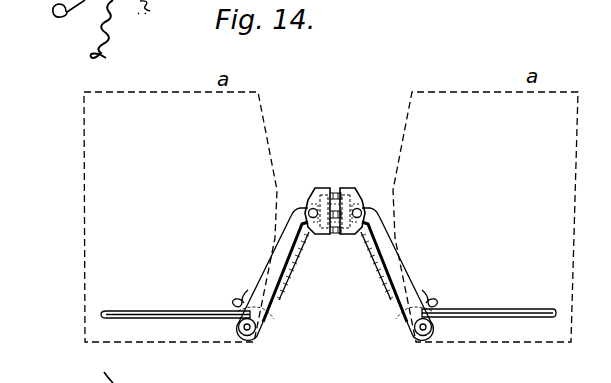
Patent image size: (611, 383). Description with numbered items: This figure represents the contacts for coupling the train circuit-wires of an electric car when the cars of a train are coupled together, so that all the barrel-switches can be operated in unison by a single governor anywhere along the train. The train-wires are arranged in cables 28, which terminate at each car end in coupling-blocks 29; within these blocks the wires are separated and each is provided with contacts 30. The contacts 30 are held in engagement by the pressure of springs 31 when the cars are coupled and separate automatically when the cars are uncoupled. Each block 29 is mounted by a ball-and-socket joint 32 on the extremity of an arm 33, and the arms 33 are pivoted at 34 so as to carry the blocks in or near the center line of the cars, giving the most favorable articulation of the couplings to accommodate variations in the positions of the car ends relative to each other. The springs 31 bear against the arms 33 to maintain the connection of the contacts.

The cables 28 is at (328, 300).
The coupling-blocks 29 is at (312, 191).
The contacts 30 is at (336, 190).
The springs 31 is at (248, 291).
The ball-and-socket joints 32 is at (299, 210).
The arms 33 is at (272, 246).
The pivot 34 is at (258, 337).